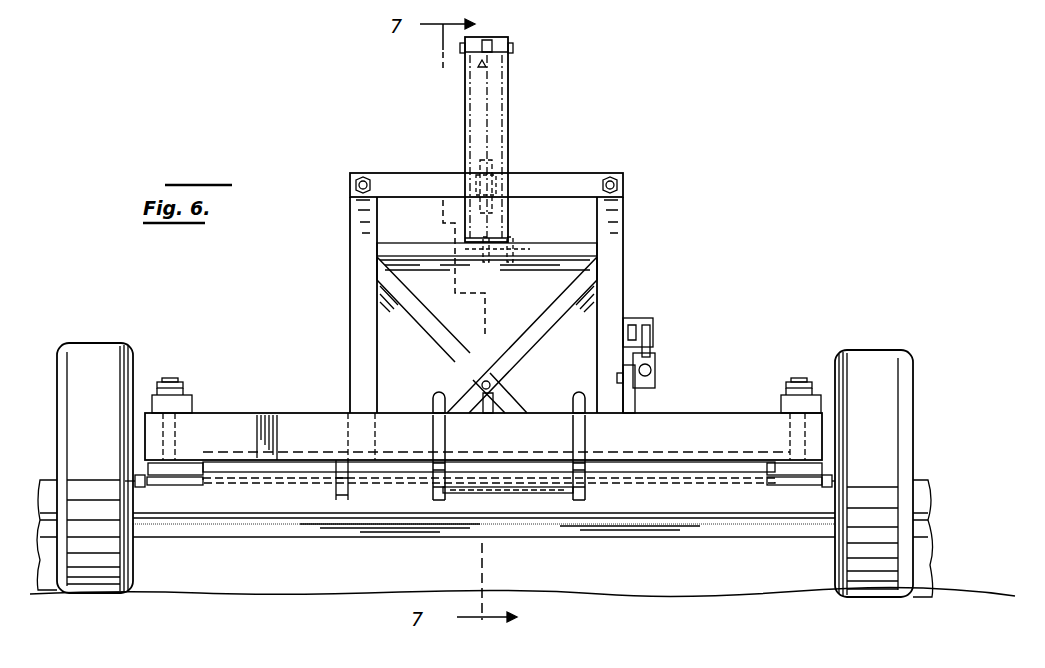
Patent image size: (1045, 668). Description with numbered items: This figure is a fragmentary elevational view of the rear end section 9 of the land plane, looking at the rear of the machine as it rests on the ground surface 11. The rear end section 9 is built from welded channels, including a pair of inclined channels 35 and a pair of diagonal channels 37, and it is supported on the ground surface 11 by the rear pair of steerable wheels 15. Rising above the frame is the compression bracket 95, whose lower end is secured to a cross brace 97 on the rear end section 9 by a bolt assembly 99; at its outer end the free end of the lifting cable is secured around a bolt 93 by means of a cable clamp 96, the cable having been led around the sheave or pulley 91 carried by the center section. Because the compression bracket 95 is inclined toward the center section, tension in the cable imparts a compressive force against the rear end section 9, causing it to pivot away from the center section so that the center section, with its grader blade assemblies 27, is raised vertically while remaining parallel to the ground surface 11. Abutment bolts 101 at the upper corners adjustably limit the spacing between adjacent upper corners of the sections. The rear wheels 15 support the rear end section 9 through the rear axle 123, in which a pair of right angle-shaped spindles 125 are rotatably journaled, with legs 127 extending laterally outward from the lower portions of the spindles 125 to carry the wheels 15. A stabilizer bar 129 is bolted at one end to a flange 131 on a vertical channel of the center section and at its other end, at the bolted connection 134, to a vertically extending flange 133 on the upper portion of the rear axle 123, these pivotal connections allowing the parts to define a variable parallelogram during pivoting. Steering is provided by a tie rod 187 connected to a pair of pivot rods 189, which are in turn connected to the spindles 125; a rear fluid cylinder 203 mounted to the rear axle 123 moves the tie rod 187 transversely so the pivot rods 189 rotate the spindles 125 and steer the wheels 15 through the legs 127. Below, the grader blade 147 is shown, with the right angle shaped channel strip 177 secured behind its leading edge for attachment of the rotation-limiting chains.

The rear end section 9 is at (476, 273).
The ground surface 11 is at (272, 582).
The rear pair of steerable wheels 15 is at (100, 352).
The grader blade assemblies 27 is at (43, 476).
The inclined channels 35 is at (360, 335).
The diagonal channels 37 is at (525, 347).
The sheave or pulley 91 is at (480, 167).
The bolt 93 is at (513, 47).
The compression bracket 95 is at (489, 139).
The cable clamp 96 is at (477, 67).
The cross brace 97 is at (545, 243).
The bolt assembly 99 is at (484, 267).
The abutment bolts 101 is at (360, 172).
The rear axle 123 is at (227, 412).
The right angle-shaped spindles 125 is at (165, 380).
The legs 127 is at (141, 488).
The stabilizer bar 129 is at (655, 335).
The flange 131 is at (645, 318).
The vertically extending flange 133 is at (635, 392).
The bolted connection 134 is at (655, 365).
The grader blade 147 is at (367, 515).
The right angle shaped channel strip 177 is at (178, 524).
The tie rod 187 is at (233, 478).
The pivot rods 189 is at (180, 467).
The rear fluid cylinder 203 is at (505, 494).